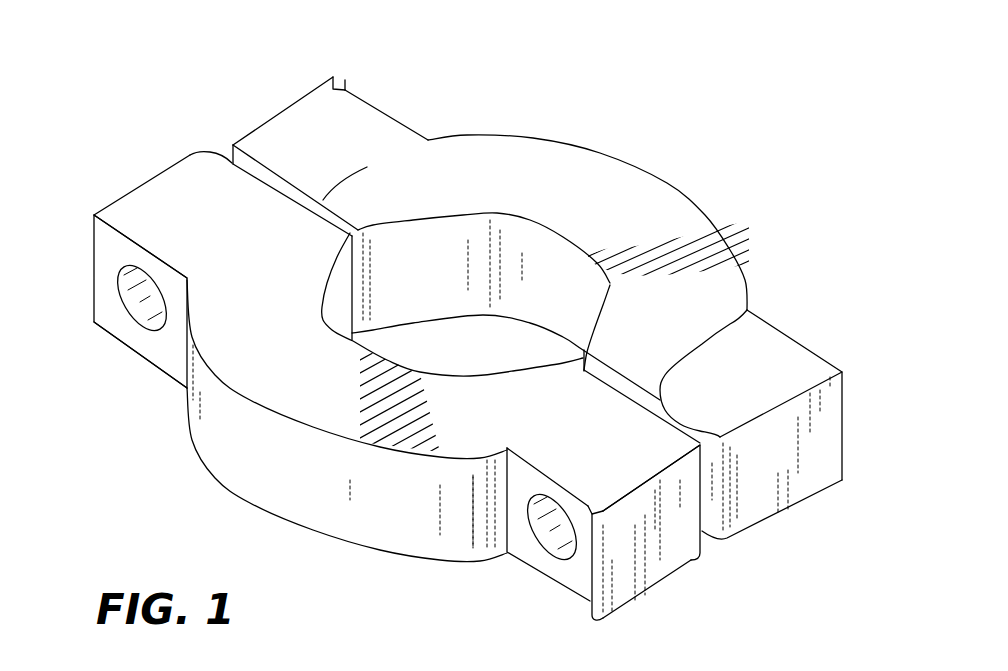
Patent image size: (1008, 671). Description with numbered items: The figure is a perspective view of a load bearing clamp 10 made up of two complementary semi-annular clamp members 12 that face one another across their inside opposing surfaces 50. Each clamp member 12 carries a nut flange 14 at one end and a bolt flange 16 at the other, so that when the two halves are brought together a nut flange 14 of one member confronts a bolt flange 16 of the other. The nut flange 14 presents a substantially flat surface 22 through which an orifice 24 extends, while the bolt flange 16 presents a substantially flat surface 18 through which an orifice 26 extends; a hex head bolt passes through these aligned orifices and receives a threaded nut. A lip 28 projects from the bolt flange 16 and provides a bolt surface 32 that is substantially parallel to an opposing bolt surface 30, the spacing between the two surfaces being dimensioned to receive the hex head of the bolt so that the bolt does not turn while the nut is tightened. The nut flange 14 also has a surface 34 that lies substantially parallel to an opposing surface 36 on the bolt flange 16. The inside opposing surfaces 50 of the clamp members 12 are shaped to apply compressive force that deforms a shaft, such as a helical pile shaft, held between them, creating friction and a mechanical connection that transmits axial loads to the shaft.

The clamp 10 is at (628, 73).
The clamp member 12 is at (643, 193).
The nut flange 14 is at (176, 205).
The bolt flange 16 is at (310, 127).
The substantially flat surface 18 is at (387, 120).
The substantially flat surface 22 is at (175, 353).
The orifice 24 is at (123, 310).
The orifice 26 is at (557, 535).
The lip 28 is at (345, 80).
The opposing bolt surface 30 is at (428, 142).
The bolt surface 32 is at (343, 90).
The surface 34 is at (298, 203).
The opposing surface 36 is at (323, 208).
The opposing surface 50 is at (570, 297).